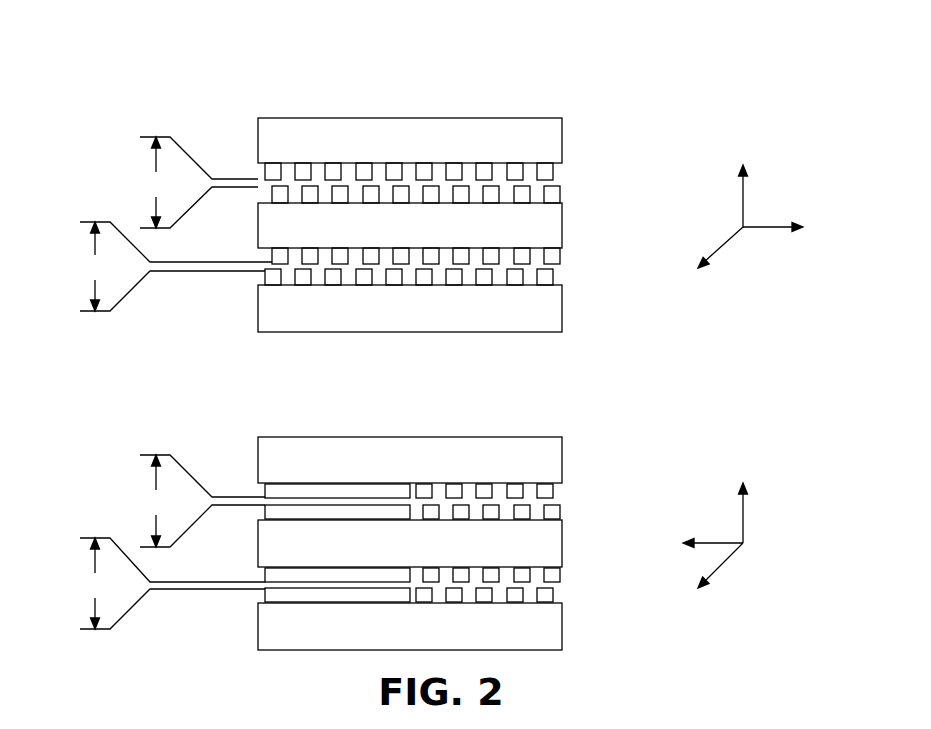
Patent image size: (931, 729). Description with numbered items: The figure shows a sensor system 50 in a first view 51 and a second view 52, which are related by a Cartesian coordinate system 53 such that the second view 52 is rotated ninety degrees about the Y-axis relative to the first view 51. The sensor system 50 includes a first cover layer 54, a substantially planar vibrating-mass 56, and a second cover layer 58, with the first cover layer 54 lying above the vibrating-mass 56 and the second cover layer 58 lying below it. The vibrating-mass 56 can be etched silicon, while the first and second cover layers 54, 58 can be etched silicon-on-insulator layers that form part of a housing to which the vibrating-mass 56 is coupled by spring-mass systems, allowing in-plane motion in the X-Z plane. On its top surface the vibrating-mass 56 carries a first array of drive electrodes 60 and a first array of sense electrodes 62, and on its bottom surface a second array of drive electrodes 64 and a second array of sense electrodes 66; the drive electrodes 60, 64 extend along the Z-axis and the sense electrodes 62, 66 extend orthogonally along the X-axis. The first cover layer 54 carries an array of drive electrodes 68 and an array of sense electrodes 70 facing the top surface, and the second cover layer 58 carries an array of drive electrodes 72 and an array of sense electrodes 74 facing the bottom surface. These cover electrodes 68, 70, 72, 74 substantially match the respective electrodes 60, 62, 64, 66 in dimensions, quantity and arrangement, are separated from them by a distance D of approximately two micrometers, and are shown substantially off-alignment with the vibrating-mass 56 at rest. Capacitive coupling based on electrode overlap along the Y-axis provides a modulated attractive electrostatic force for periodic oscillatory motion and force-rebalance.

The sensor system 50 is at (116, 28).
The first view 51 is at (237, 96).
The second view 52 is at (237, 421).
The Cartesian coordinate system 53 is at (780, 170).
The first cover layer 54 is at (400, 118).
The vibrating-mass 56 is at (257, 225).
The second cover layer 58 is at (257, 317).
The first array of drive electrodes 60 is at (523, 197).
The first array of sense electrodes 62 is at (493, 510).
The second array of drive electrodes 64 is at (372, 257).
The second array of sense electrodes 66 is at (520, 577).
The array of drive electrodes 68 is at (425, 177).
The array of sense electrodes 70 is at (515, 493).
The array of drive electrodes 72 is at (453, 277).
The array of sense electrodes 74 is at (515, 593).